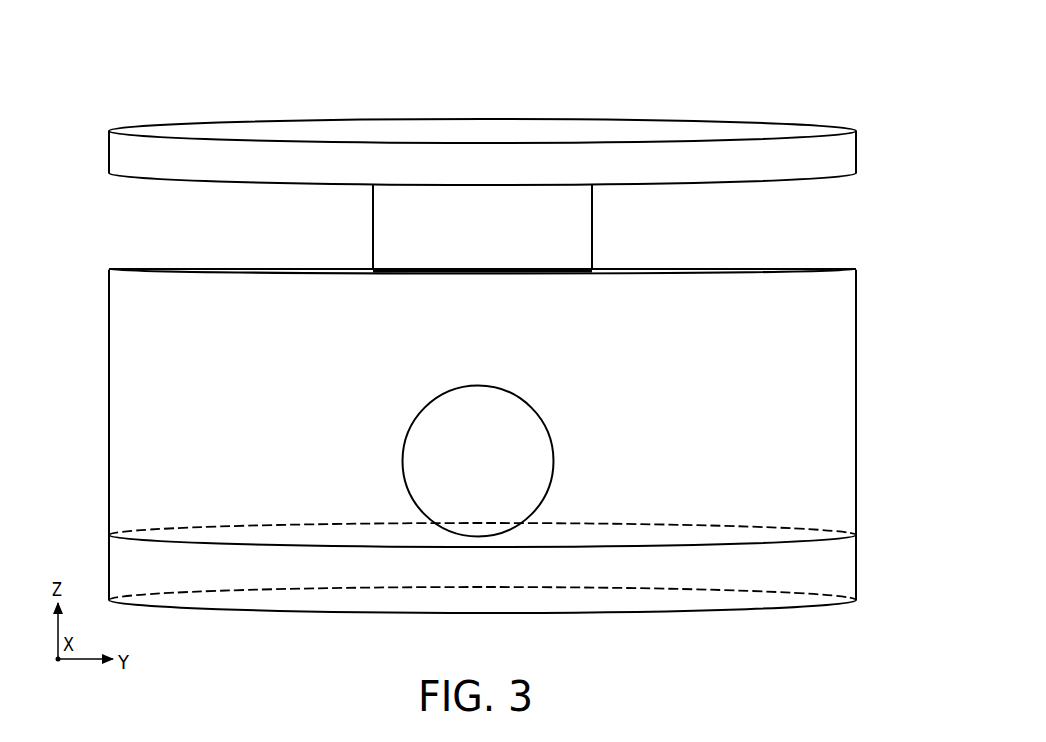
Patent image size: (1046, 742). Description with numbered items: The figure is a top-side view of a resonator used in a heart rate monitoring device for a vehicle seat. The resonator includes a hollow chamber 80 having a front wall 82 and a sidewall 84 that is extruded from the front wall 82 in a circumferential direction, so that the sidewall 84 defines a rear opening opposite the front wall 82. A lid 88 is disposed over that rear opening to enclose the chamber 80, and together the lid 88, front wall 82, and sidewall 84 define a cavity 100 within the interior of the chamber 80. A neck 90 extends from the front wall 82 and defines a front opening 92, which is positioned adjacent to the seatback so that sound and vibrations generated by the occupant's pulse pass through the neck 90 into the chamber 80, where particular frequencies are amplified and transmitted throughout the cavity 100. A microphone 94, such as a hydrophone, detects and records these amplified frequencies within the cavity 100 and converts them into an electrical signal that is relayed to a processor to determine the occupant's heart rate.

The chamber 80 is at (535, 512).
The front wall 82 is at (210, 270).
The sidewall 84 is at (449, 421).
The lid 88 is at (628, 598).
The neck 90 is at (589, 236).
The front opening 92 is at (298, 124).
The microphone 94 is at (538, 440).
The cavity 100 is at (843, 314).